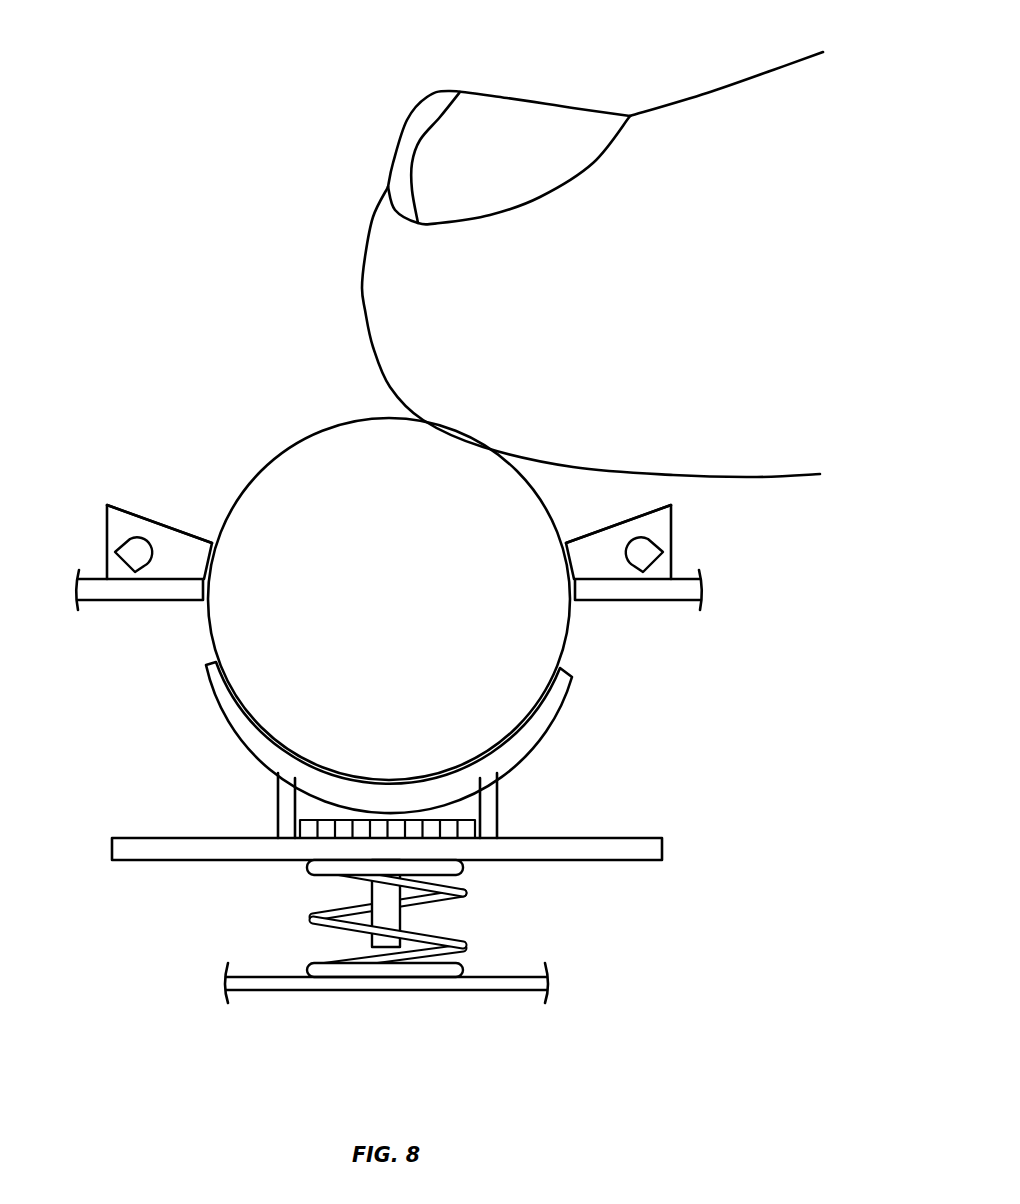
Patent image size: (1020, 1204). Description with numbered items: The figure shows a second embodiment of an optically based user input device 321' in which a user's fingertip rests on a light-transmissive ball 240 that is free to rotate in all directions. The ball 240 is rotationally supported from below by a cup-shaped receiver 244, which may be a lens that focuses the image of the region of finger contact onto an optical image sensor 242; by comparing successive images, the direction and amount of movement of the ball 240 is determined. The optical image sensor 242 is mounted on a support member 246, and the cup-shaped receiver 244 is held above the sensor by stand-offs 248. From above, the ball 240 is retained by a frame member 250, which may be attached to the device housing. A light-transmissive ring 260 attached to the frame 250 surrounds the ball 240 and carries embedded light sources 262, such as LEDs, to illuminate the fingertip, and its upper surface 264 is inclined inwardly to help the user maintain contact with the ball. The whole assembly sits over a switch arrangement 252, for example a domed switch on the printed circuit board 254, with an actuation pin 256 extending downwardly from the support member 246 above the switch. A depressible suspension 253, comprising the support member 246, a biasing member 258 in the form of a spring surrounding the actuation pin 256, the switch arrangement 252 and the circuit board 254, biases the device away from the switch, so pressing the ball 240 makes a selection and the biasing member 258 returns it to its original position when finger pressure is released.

The optically based user input device 321' is at (389, 707).
The light-transmissive ball 240 is at (345, 450).
The optical image sensor 242 is at (465, 830).
The cup-shaped receiver 244 is at (548, 705).
The support member 246 is at (207, 850).
The stand-offs 248 is at (285, 810).
The frame member 250 is at (152, 594).
The switch arrangement 252 is at (380, 960).
The depressible suspension 253 is at (145, 935).
The printed circuit board 254 is at (380, 985).
The actuation pin 256 is at (392, 922).
The biasing member 258 is at (345, 873).
The light-transmissive ring 260 is at (110, 529).
The light sources 262 is at (133, 553).
The upper surface 264 is at (177, 503).